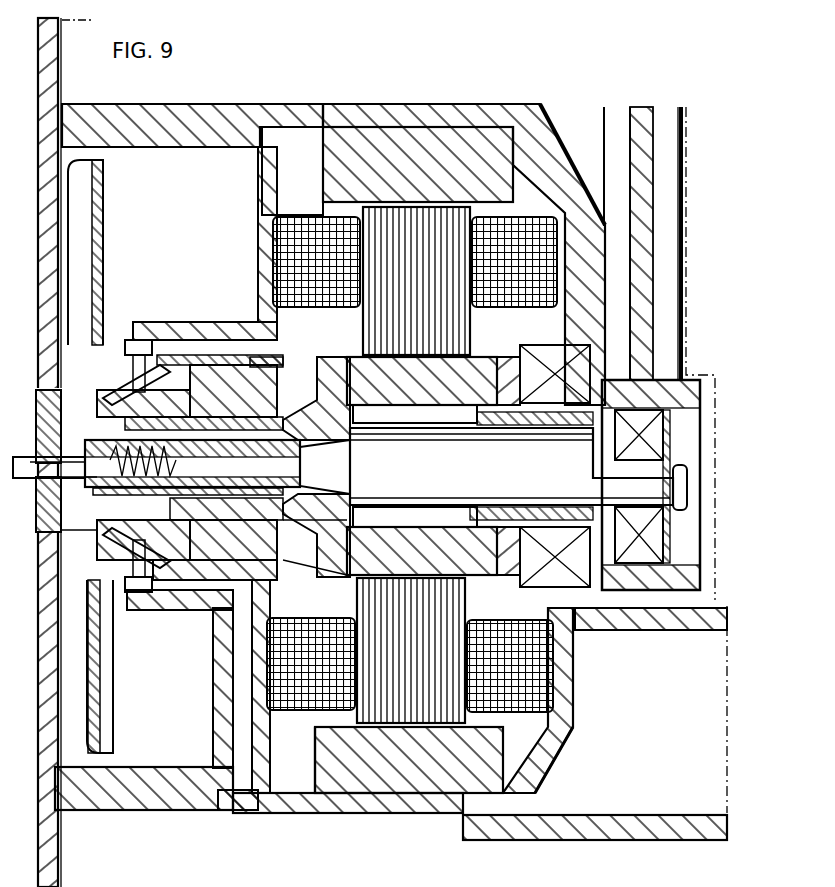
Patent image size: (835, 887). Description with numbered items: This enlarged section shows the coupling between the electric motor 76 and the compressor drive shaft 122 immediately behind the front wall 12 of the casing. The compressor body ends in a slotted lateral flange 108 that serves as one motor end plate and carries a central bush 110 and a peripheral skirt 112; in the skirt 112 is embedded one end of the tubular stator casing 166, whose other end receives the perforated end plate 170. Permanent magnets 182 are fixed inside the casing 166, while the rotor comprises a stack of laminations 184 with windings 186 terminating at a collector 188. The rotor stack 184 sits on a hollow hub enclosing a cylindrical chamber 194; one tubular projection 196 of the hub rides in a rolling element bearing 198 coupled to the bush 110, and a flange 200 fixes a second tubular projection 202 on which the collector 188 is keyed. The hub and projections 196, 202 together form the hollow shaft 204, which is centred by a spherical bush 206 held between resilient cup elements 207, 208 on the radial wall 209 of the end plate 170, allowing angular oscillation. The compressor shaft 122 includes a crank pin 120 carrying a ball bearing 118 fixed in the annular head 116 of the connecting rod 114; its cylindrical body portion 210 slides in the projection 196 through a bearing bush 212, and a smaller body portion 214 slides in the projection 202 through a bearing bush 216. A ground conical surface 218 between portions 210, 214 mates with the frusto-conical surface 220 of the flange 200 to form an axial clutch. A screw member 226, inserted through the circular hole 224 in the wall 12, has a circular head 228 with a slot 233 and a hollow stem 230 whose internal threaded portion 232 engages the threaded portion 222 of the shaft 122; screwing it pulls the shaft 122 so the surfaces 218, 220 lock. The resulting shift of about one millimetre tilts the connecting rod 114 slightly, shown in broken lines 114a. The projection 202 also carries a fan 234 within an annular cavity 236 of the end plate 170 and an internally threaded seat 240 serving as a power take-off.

The front wall 12 is at (45, 236).
The electric motor 76 is at (298, 158).
The lateral flange 108 is at (562, 137).
The central bush 110 is at (520, 342).
The peripheral skirt 112 is at (534, 784).
The connecting rod 114 is at (686, 203).
The oblique disposition of connecting rod 114a is at (694, 322).
The annular head 116 is at (652, 576).
The ball bearing 118 is at (650, 536).
The crank pin 120 is at (656, 483).
The drive shaft 122 is at (614, 300).
The tubular stator casing 166 is at (230, 810).
The perforated end plate 170 is at (156, 724).
The permanent magnets 182 is at (398, 140).
The stack of laminations 184 is at (316, 760).
The windings 186 is at (290, 228).
The collector 188 is at (232, 322).
The cylindrical chamber 194 is at (400, 512).
The tubular projection 196 is at (522, 502).
The rolling element bearing 198 is at (574, 645).
The flange 200 is at (362, 578).
The tubular projection 202 is at (352, 570).
The hollow shaft 204 is at (304, 383).
The bush 206 is at (58, 625).
The resilient cup element 207 is at (190, 565).
The resilient cup element 208 is at (108, 590).
The radial wall 209 is at (145, 600).
The cylindrical body portion 210 is at (506, 616).
The bearing bush 212 is at (525, 362).
The cylindrical body portion 214 is at (325, 467).
The bearing bush 216 is at (273, 357).
The conical surface 218 is at (335, 482).
The frusto-conical surface 220 is at (340, 440).
The threaded portion 222 is at (184, 456).
The circular hole 224 is at (104, 330).
The screw member 226 is at (48, 418).
The circular head 228 is at (60, 700).
The hollow stem 230 is at (152, 338).
The internal threaded portion 232 is at (222, 684).
The slot 233 is at (100, 708).
The fan 234 is at (98, 206).
The annular cavity 236 is at (126, 767).
The internally threaded seat 240 is at (105, 398).